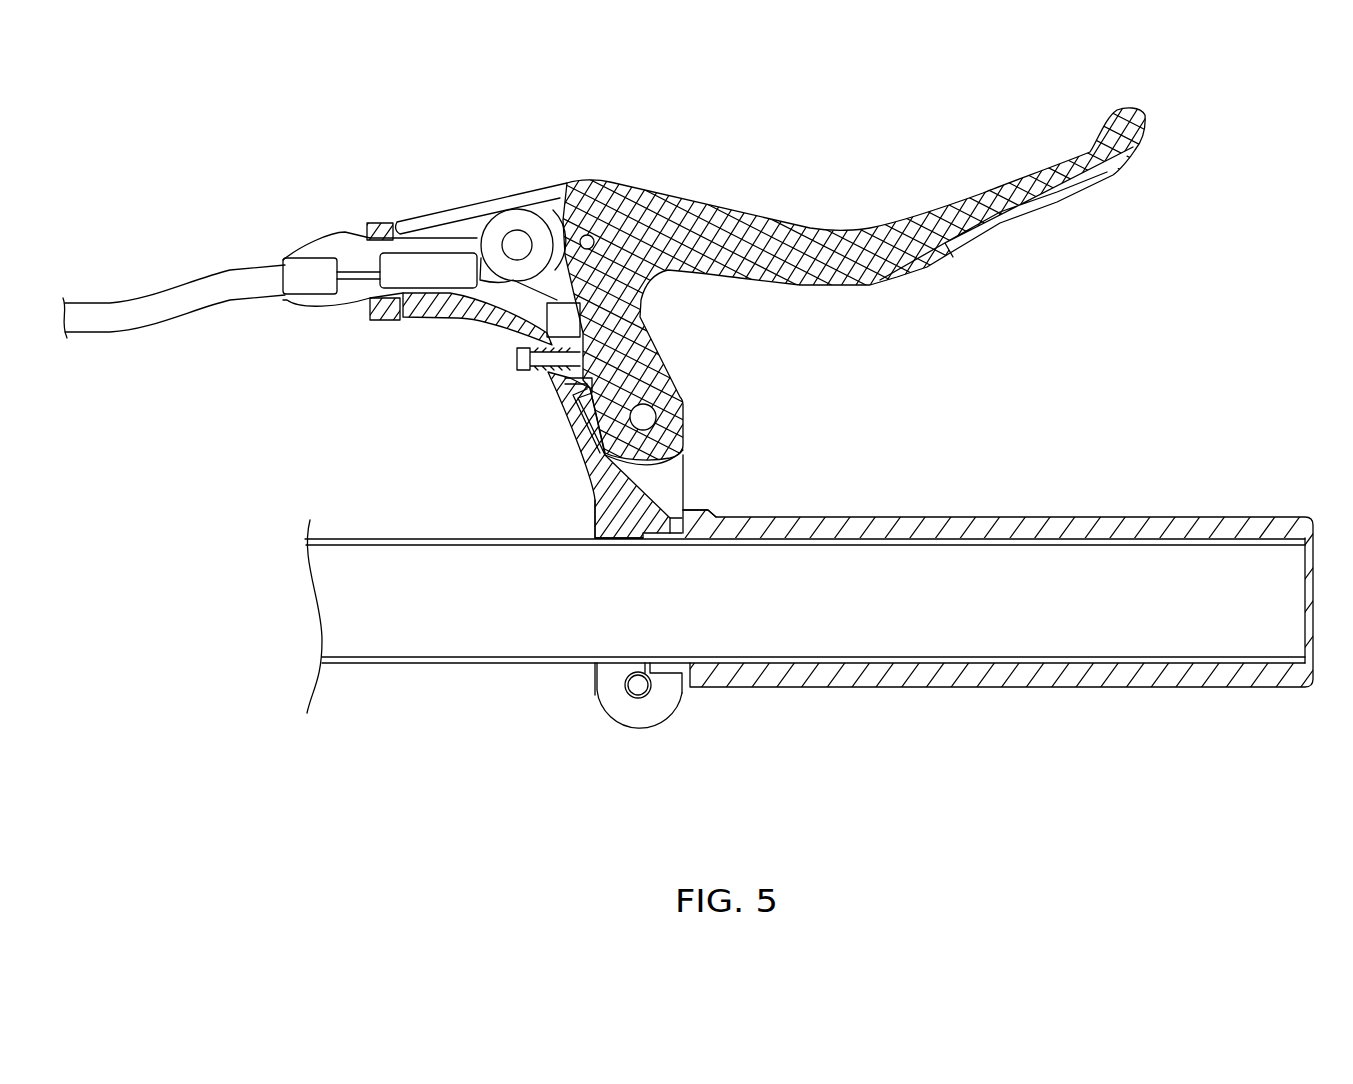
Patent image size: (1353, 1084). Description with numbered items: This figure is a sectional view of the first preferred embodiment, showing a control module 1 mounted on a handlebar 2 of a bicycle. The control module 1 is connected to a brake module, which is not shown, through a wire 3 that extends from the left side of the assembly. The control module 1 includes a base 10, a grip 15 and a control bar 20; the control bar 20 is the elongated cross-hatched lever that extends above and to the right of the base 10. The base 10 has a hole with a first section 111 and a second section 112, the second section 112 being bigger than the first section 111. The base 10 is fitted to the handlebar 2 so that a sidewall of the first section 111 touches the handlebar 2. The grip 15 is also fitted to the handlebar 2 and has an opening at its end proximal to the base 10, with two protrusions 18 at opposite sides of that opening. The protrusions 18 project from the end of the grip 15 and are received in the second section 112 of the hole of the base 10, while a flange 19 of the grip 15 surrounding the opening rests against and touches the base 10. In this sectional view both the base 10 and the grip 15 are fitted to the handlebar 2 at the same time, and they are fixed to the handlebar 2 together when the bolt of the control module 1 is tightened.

The control module 1 is at (1230, 196).
The handlebar 2 is at (429, 539).
The wire 3 is at (193, 287).
The base 10 is at (577, 433).
The grip 15 is at (1158, 527).
The protrusions 18 is at (667, 537).
The flange 19 is at (697, 690).
The control bar 20 is at (657, 200).
The first section 111 is at (623, 538).
The second section 112 is at (672, 515).